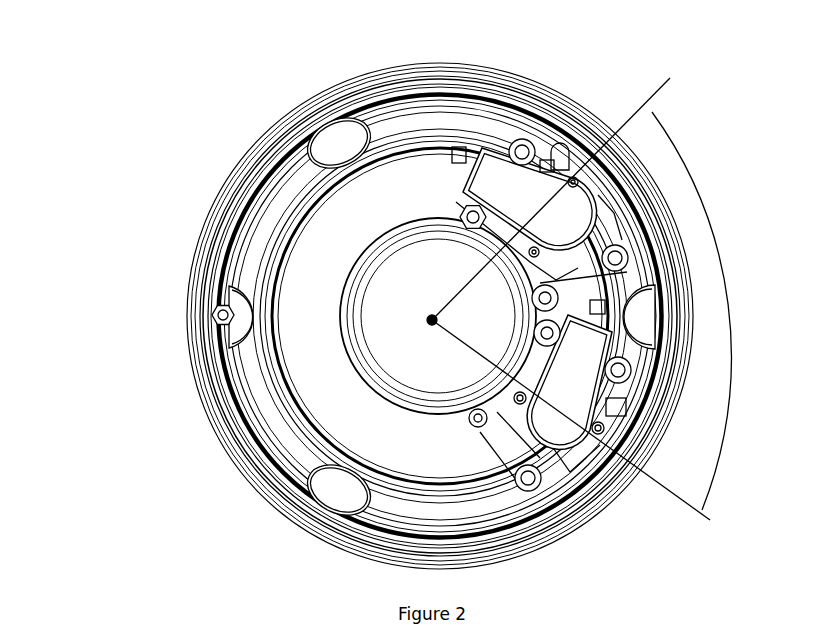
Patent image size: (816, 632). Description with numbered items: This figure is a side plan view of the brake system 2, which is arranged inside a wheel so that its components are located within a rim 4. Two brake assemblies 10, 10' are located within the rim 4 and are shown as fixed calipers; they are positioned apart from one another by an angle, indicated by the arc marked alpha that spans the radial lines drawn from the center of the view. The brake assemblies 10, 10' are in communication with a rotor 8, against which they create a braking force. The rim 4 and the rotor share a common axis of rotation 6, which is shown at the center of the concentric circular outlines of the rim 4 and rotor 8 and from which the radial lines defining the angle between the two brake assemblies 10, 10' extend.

The brake system 2 is at (220, 86).
The rim 4 is at (205, 444).
The axis of rotation 6 is at (432, 320).
The rotor 8 is at (342, 212).
The brake assembly 10 is at (595, 417).
The brake assembly 10' is at (540, 144).